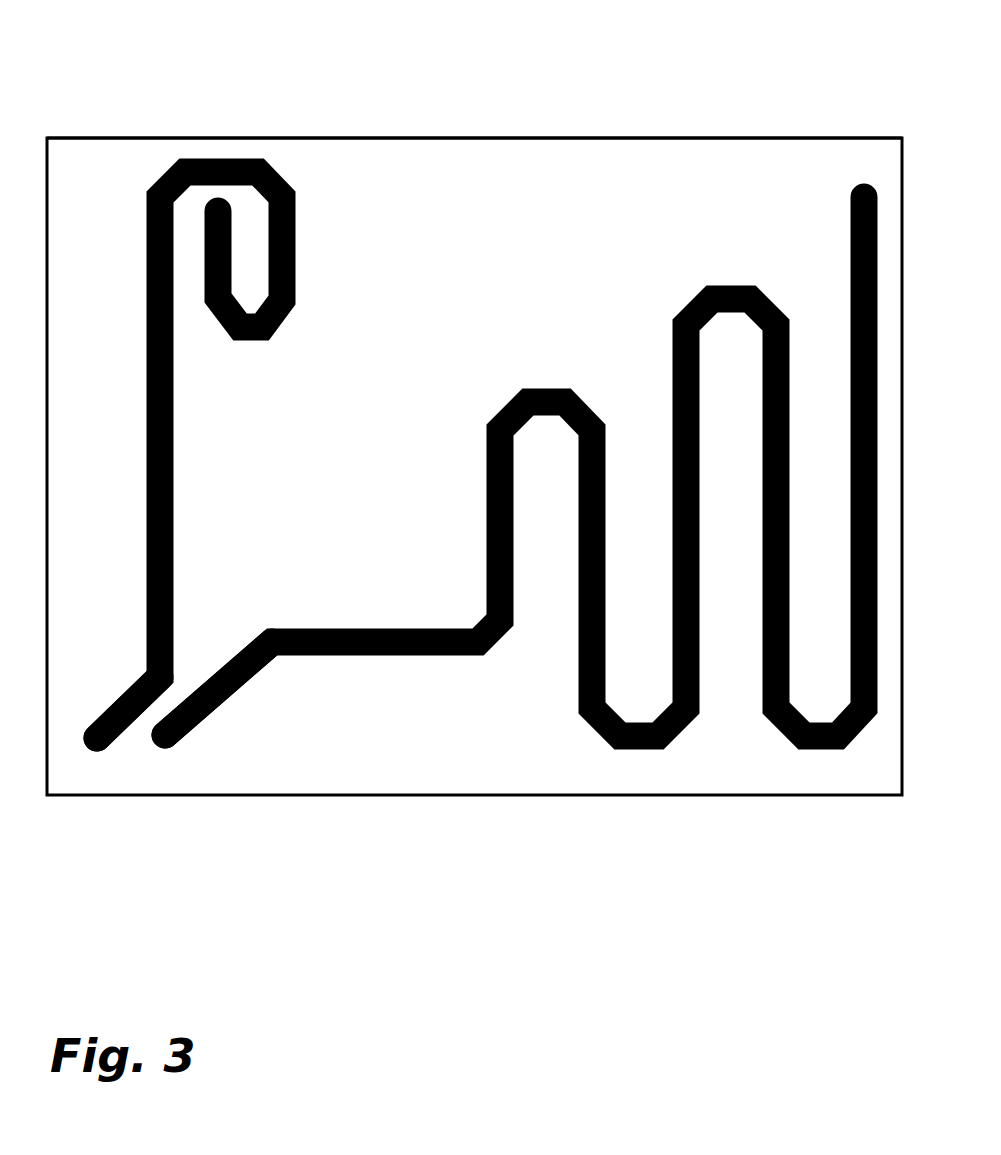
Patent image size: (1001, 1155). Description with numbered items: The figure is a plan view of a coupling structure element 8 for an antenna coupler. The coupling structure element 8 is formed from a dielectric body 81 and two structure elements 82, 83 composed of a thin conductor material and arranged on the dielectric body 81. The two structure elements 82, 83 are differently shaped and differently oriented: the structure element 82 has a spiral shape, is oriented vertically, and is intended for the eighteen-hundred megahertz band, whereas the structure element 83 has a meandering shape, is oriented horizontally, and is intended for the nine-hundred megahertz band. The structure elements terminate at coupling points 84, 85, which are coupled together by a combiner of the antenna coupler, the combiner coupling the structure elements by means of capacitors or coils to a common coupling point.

The coupling structure element 8 is at (506, 137).
The dielectric body 81 is at (390, 160).
The structure element 82 is at (213, 160).
The structure element 83 is at (603, 745).
The coupling point 84 is at (92, 744).
The coupling point 85 is at (167, 742).